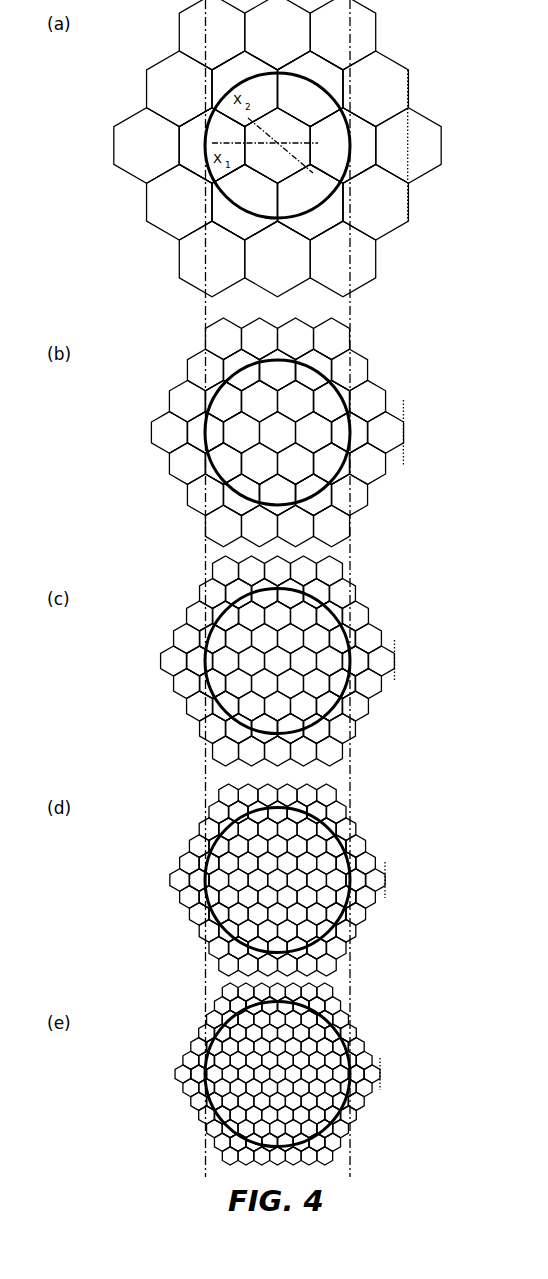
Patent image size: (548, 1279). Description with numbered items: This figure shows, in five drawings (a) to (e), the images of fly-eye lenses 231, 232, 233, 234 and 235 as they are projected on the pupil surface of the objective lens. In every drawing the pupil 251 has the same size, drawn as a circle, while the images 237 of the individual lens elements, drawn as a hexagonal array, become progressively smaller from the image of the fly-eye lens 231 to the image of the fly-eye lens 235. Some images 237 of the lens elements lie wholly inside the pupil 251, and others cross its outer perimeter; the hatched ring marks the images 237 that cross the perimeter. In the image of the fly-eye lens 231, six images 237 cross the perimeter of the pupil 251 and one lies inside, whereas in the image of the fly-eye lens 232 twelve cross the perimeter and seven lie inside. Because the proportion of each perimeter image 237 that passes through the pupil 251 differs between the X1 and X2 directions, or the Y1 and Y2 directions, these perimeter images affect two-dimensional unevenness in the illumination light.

The image of the fly-eye lens 231 is at (101, 155).
The image of the fly-eye lens 232 is at (141, 445).
The image of the fly-eye lens 233 is at (156, 675).
The image of the fly-eye lens 234 is at (166, 893).
The image of the fly-eye lens 235 is at (166, 1087).
The image of the lens element 237 is at (397, 62).
The pupil 251 is at (330, 216).